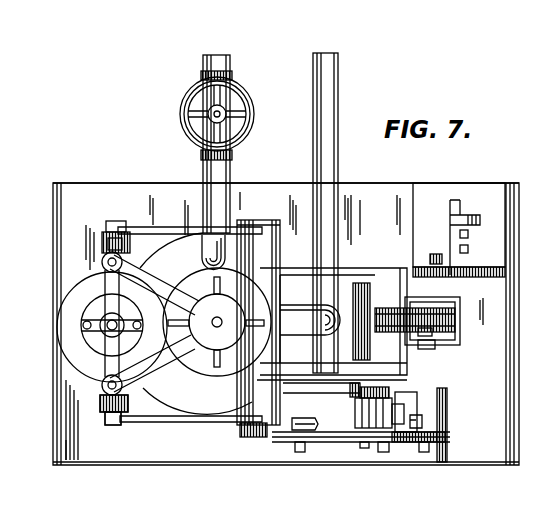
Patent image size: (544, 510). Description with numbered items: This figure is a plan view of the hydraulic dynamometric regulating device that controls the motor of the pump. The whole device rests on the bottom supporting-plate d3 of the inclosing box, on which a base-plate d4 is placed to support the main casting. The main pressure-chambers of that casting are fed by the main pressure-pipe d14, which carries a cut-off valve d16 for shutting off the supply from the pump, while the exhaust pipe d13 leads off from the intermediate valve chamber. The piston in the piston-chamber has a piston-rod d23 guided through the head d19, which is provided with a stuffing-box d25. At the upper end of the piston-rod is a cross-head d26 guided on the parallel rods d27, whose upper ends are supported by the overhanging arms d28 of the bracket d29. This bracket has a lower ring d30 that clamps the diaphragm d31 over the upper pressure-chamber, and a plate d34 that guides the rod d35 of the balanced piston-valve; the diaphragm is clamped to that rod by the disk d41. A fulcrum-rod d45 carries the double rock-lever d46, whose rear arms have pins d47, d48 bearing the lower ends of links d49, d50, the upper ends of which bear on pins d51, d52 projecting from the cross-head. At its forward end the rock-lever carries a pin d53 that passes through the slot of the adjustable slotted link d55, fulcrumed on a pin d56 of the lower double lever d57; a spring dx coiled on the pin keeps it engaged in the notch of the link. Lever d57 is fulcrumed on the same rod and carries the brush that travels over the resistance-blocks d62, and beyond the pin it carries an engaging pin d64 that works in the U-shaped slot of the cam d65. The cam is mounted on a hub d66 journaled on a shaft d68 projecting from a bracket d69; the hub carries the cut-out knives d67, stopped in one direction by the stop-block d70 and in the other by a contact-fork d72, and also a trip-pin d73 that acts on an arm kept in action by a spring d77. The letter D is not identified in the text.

The bottom supporting-plate d3 is at (163, 463).
The exhaust pipe d13 is at (274, 183).
The double rock-lever d46 is at (160, 228).
The cut-off valve d16 is at (190, 100).
The fulcrum-rod d45 is at (312, 150).
The main pressure-pipe d14 is at (239, 220).
The rod D is at (190, 198).
The cross-head pin d52 is at (108, 225).
The rock-lever pin d48 is at (110, 240).
The link d50 is at (110, 250).
The overhanging arms d28 is at (130, 228).
The parallel rods d27 is at (101, 262).
The cross-head d26 is at (100, 381).
The stuffing-box d25 is at (86, 338).
The piston-rod d23 is at (100, 322).
The piston-chamber head d19 is at (60, 322).
The diaphragm d31 is at (207, 362).
The lower ring d30 is at (222, 378).
The guide plate d34 is at (217, 322).
The valve rod d35 is at (217, 327).
The bracket d29 is at (214, 282).
The base-plate d4 is at (205, 408).
The lower double lever d57 is at (355, 290).
The fulcrum pin d56 is at (380, 298).
The resistance-blocks d62 is at (430, 258).
The cam d65 is at (405, 402).
The adjustable slotted link d55 is at (455, 318).
The spring dx is at (445, 332).
The rock-lever pin d53 is at (435, 346).
The engaging pin d64 is at (385, 393).
The trip-pin d73 is at (355, 415).
The stop-block d70 is at (392, 418).
The clamping disk d41 is at (425, 422).
The bracket d69 is at (440, 438).
The spring d77 is at (305, 415).
The contact-fork d72 is at (303, 432).
The hub d66 is at (318, 440).
The shaft d68 is at (362, 445).
The cut-out knives d67 is at (370, 448).
The link d49 is at (90, 440).
The cross-head pin d51 is at (110, 415).
The rock-lever pin d47 is at (113, 402).